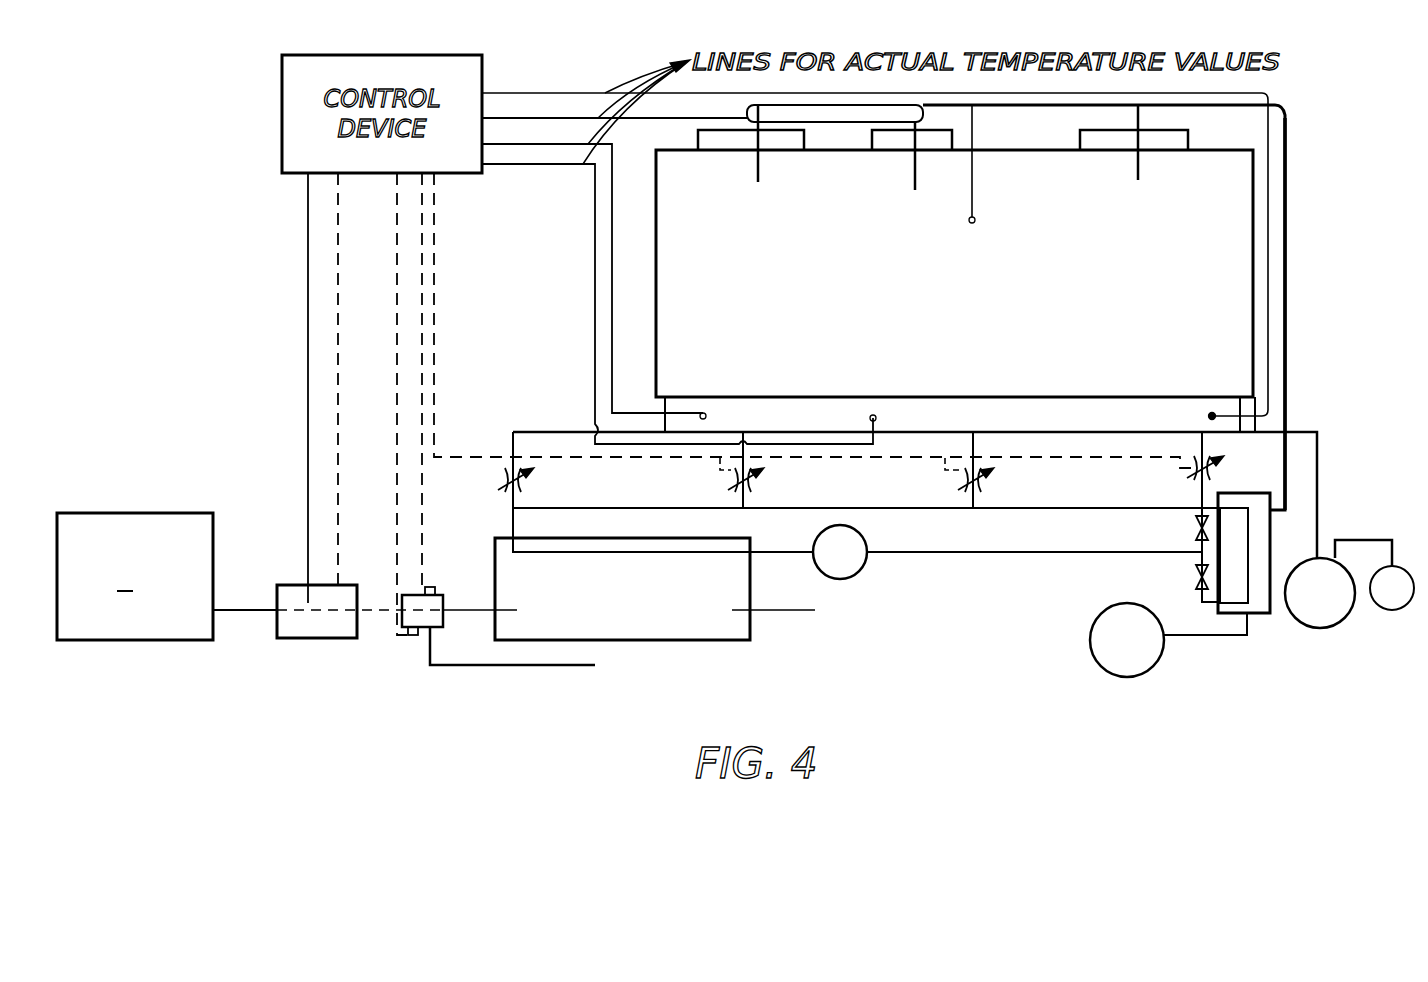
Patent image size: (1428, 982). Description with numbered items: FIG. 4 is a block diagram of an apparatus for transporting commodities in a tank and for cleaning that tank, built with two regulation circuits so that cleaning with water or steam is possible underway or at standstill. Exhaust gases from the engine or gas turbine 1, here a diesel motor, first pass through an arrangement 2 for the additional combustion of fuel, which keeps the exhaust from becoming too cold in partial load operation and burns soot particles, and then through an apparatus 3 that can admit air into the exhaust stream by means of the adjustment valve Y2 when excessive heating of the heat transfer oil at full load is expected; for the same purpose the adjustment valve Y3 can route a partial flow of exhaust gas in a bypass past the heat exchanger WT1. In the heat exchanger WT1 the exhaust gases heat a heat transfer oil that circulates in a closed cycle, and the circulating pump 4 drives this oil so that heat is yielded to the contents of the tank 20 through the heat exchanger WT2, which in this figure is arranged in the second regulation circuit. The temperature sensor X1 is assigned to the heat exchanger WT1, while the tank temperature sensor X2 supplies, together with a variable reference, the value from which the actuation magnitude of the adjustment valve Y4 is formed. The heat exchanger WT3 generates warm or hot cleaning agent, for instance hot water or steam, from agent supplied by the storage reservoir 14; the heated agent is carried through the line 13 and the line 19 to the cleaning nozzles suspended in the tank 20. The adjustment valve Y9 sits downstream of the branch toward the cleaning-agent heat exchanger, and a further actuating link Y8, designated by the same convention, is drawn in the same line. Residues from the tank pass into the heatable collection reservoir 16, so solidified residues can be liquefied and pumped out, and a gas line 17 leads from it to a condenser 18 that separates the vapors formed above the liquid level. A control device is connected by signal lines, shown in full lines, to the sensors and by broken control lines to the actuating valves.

The engine or gas turbine 1 is at (135, 576).
The arrangement for additional combustion of fuel 2 is at (297, 641).
The apparatus for air supply 3 is at (412, 616).
The circulating pump 4 is at (853, 572).
The line 13 is at (1288, 300).
The storage reservoir 14 is at (1090, 652).
The collection reservoir 16 is at (1328, 630).
The gas line 17 is at (1364, 540).
The condenser 18 is at (1393, 604).
The line 19 is at (756, 182).
The tank 20 is at (1232, 258).
The temperature sensor X1 is at (705, 410).
The temperature sensor X2 is at (978, 222).
The adjustment valve Y2 is at (431, 588).
The adjustment valve Y3 is at (413, 636).
The adjustment valve Y4 is at (526, 484).
The valve Y8 is at (1195, 528).
The adjustment valve Y9 is at (1195, 578).
The heat exchanger WT1 is at (657, 630).
The heat exchanger WT2 is at (1062, 425).
The heat exchanger WT3 is at (1258, 607).